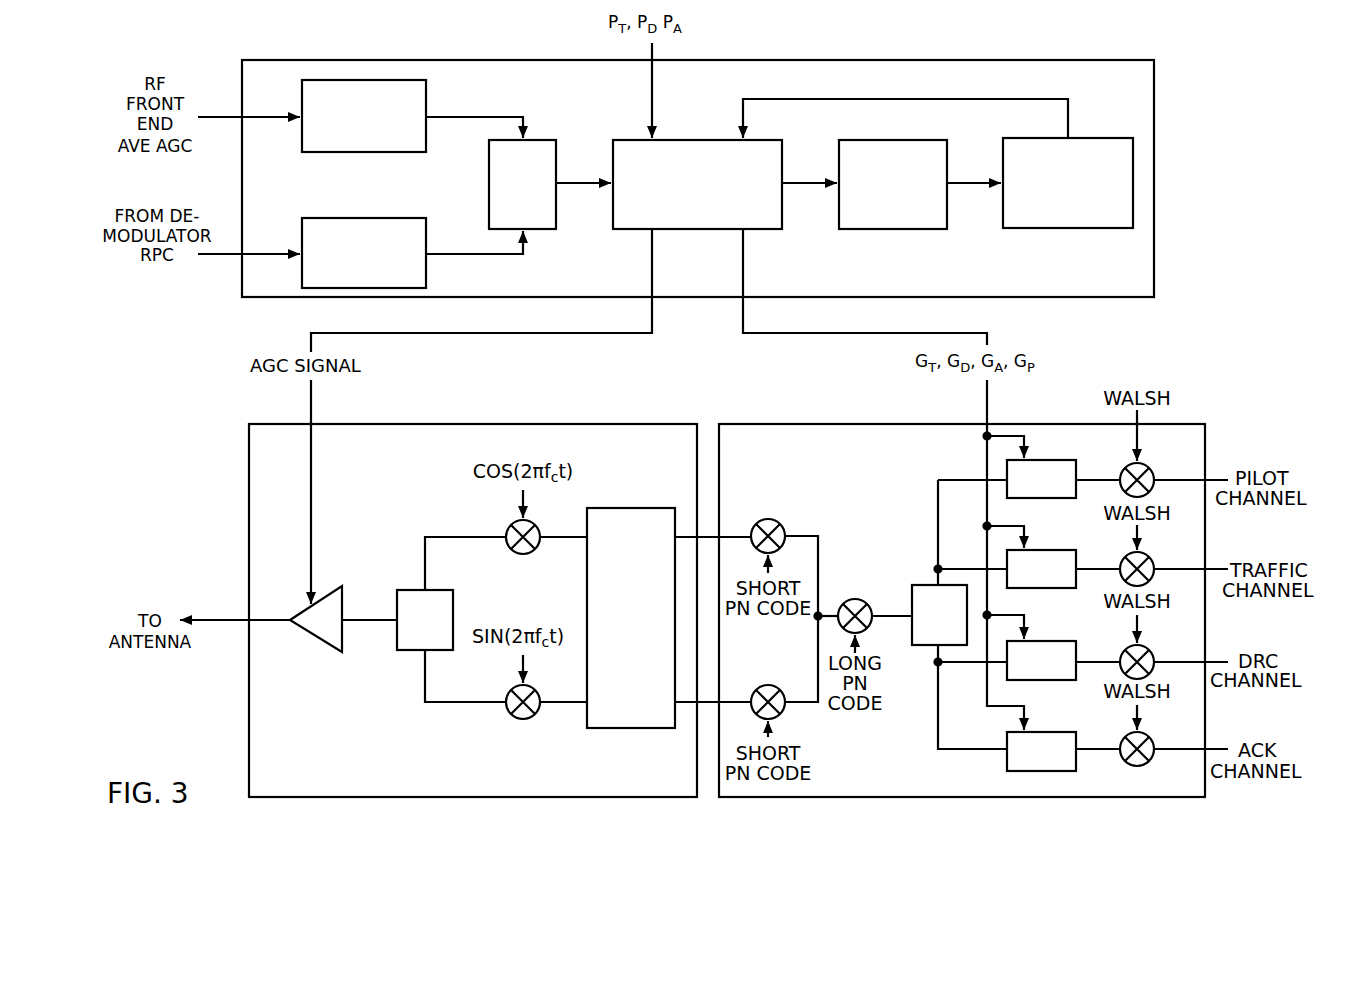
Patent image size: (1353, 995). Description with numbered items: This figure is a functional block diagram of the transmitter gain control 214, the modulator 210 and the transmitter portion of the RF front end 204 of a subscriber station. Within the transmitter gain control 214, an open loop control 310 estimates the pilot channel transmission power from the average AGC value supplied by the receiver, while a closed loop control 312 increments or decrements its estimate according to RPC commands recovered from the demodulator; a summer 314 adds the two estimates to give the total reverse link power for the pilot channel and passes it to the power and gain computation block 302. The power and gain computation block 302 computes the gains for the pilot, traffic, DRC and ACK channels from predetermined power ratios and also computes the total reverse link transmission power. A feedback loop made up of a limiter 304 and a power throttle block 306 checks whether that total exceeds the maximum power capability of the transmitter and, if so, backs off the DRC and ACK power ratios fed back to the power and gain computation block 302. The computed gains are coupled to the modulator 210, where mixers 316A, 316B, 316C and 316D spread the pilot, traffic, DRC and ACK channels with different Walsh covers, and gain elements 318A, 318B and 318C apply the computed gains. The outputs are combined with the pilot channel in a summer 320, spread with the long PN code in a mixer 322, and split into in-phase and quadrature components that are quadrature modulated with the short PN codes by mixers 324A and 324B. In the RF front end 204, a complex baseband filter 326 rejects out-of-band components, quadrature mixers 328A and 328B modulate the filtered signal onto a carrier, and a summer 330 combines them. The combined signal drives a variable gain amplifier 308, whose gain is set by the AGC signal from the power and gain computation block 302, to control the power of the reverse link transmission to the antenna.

The transmitter gain control 214 is at (785, 60).
The open loop control 310 is at (370, 152).
The closed loop control 312 is at (354, 218).
The summer 314 is at (540, 140).
The power and gain computation block 302 is at (672, 229).
The limiter 304 is at (893, 229).
The power throttle block 306 is at (1073, 228).
The RF front end 204 is at (448, 424).
The modulator 210 is at (885, 424).
The complex baseband filter 326 is at (622, 508).
The quadrature mixer 328A is at (532, 553).
The quadrature mixer 328B is at (532, 718).
The summer 330 is at (414, 590).
The variable gain amplifier (VGA) 308 is at (316, 638).
The mixer 324A is at (758, 521).
The mixer 324B is at (768, 685).
The mixer 322 is at (853, 599).
The summer 320 is at (912, 585).
The mixer 316A is at (1150, 468).
The mixer 316B is at (1160, 551).
The mixer 316C is at (1160, 641).
The mixer 316D is at (1160, 731).
The gain element 318A is at (1063, 550).
The gain element 318B is at (1063, 641).
The gain element 318C is at (1063, 732).